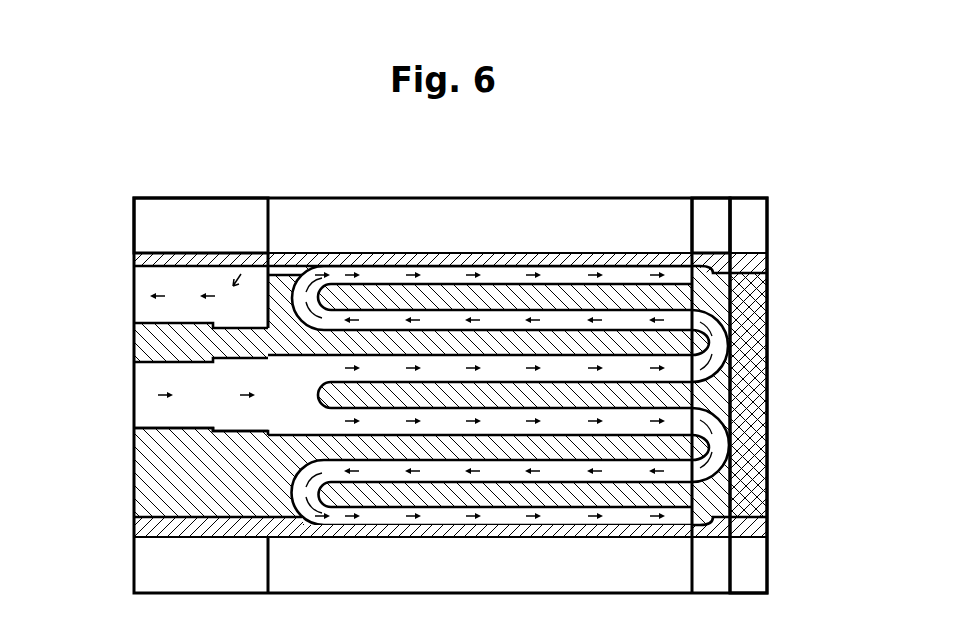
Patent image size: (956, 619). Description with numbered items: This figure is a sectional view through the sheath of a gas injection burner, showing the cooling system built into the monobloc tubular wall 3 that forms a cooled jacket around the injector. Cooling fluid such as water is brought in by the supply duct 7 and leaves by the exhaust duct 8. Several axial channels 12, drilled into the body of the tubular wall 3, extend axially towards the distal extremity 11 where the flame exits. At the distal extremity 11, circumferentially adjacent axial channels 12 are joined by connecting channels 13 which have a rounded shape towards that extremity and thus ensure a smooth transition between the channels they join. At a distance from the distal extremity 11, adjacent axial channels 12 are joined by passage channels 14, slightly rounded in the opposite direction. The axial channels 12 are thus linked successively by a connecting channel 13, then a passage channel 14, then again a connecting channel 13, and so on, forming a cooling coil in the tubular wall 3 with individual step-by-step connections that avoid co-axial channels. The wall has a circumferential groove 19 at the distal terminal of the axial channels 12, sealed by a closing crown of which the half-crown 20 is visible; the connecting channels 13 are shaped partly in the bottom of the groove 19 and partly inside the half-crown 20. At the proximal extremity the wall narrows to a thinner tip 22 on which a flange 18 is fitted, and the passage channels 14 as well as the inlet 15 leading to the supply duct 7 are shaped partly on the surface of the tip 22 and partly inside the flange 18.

The monobloc tubular wall 3 is at (562, 197).
The supply duct 7 is at (133, 402).
The exhaust duct 8 is at (133, 292).
The distal extremity 11 is at (748, 197).
The axial channels 12 is at (447, 365).
The connecting channels 13 is at (737, 307).
The passage channels 14 is at (300, 262).
The inlet 15 is at (200, 403).
The flange 18 is at (170, 217).
The circumferential groove 19 is at (722, 387).
The half-crown 20 is at (710, 220).
The tip 22 is at (231, 250).